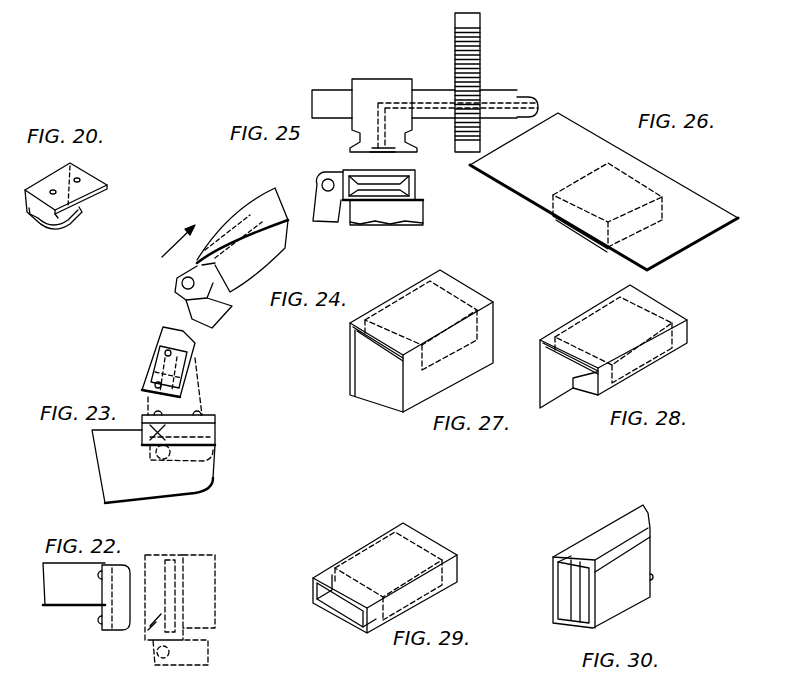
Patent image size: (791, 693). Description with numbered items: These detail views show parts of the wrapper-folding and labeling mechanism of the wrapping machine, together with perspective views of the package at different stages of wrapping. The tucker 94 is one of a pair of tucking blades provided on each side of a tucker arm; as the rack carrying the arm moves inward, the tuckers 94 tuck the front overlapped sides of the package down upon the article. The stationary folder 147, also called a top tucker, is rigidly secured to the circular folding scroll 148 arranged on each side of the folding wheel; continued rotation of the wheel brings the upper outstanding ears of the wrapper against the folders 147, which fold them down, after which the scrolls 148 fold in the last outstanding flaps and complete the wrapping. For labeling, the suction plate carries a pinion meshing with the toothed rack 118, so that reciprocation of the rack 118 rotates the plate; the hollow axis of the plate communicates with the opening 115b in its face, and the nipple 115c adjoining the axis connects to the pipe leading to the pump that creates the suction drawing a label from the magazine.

In FIG. 20, the stationary folder 147 is at (107, 185).
In FIG. 23, the stationary folder 147 is at (150, 348).
In FIG. 24, the circular folding scroll 148 is at (273, 228).
In FIG. 23, the circular folding scroll 148 is at (193, 345).
In FIG. 25, the toothed rack 118 is at (482, 59).
In FIG. 25, the opening in the face of the suction plate 115b is at (374, 113).
In FIG. 25, the nipple 115c is at (498, 97).
In FIG. 22, the tucker 94 is at (107, 631).